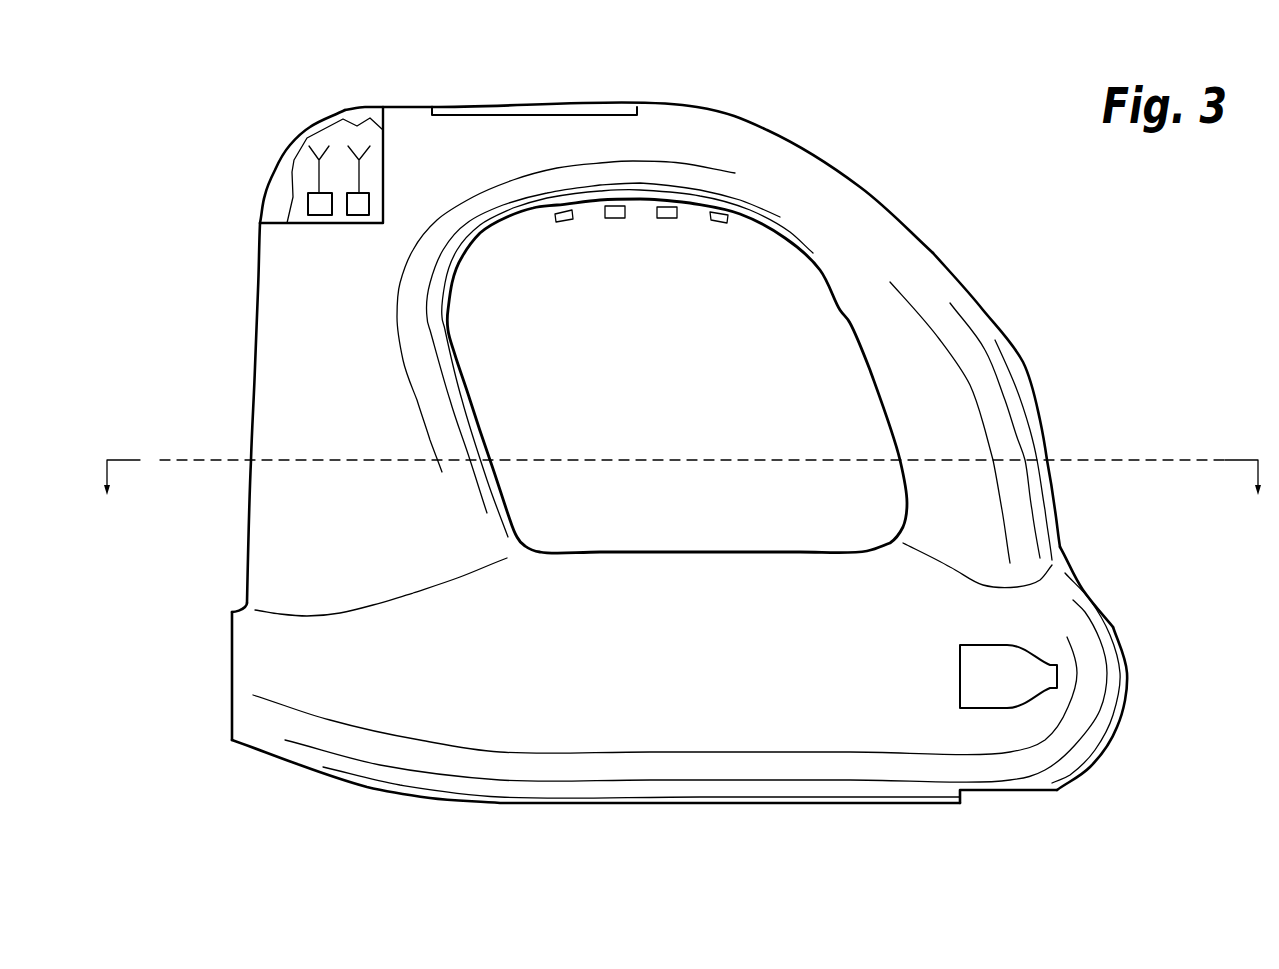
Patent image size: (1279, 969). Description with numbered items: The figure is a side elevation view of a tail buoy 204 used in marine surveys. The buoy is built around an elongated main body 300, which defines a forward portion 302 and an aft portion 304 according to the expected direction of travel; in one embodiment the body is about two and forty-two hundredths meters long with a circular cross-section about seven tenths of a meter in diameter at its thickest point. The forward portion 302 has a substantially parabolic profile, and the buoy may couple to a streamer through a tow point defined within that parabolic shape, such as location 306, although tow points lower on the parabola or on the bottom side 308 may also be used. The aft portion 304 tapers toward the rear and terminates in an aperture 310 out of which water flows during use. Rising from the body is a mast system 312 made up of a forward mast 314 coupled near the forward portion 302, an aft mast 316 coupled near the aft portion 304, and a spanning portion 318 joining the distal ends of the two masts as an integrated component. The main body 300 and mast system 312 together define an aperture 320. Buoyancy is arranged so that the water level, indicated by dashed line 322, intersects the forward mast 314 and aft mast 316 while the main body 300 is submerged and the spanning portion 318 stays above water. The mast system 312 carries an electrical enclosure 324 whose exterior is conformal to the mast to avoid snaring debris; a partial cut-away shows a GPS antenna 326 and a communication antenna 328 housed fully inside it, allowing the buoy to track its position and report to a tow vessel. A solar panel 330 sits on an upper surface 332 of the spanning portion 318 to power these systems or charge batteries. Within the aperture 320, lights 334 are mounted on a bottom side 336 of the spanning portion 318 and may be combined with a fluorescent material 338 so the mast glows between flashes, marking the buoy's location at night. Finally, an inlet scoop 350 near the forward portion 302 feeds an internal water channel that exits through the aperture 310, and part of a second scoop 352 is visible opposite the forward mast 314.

The tail buoy 204 is at (1060, 222).
The elongated main body 300 is at (662, 691).
The forward portion 302 is at (1108, 610).
The aft portion 304 is at (232, 610).
The tow point location 306 is at (1130, 676).
The bottom side 308 is at (701, 805).
The aperture 310 is at (232, 673).
The mast system 312 is at (218, 263).
The forward mast 314 is at (1028, 371).
The aft mast 316 is at (255, 372).
The spanning portion 318 is at (667, 105).
The aperture 320 is at (663, 357).
The dashed line 322 is at (681, 458).
The electrical enclosure 324 is at (343, 110).
The GPS antenna 326 is at (362, 174).
The communication antenna 328 is at (316, 174).
The solar panel 330 is at (547, 104).
The upper surface 332 is at (413, 104).
The lights 334 is at (613, 219).
The bottom side 336 is at (642, 205).
The fluorescent material 338 is at (559, 223).
The scoop 350 is at (983, 645).
The scoop 352 is at (993, 793).